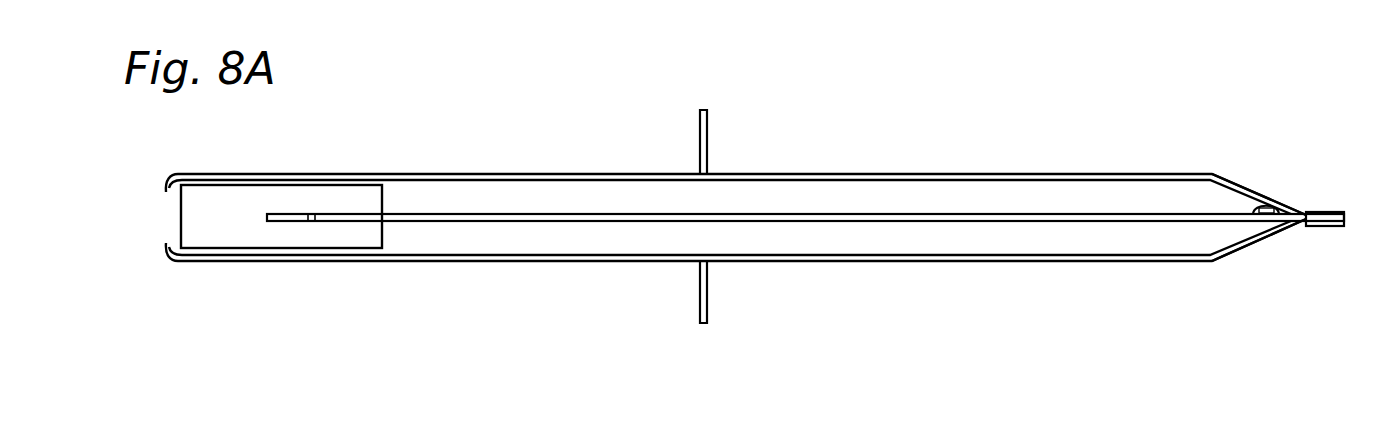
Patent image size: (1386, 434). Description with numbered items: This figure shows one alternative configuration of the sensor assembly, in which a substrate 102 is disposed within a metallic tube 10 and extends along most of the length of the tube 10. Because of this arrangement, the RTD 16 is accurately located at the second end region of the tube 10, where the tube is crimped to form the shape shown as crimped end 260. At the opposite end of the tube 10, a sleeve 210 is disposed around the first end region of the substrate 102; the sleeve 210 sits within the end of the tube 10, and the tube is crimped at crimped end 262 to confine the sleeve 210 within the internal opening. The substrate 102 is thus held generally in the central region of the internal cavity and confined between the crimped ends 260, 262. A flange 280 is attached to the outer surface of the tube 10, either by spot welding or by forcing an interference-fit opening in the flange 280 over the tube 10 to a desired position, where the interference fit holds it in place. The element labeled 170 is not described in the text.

The metallic tube 10 is at (892, 173).
The RTD 16 is at (1262, 196).
The substrate 102 is at (500, 212).
The marker 170 is at (1277, 207).
The sleeve 210 is at (283, 193).
The crimped end 260 is at (1297, 226).
The crimped end 262 is at (166, 245).
The flange 280 is at (708, 135).